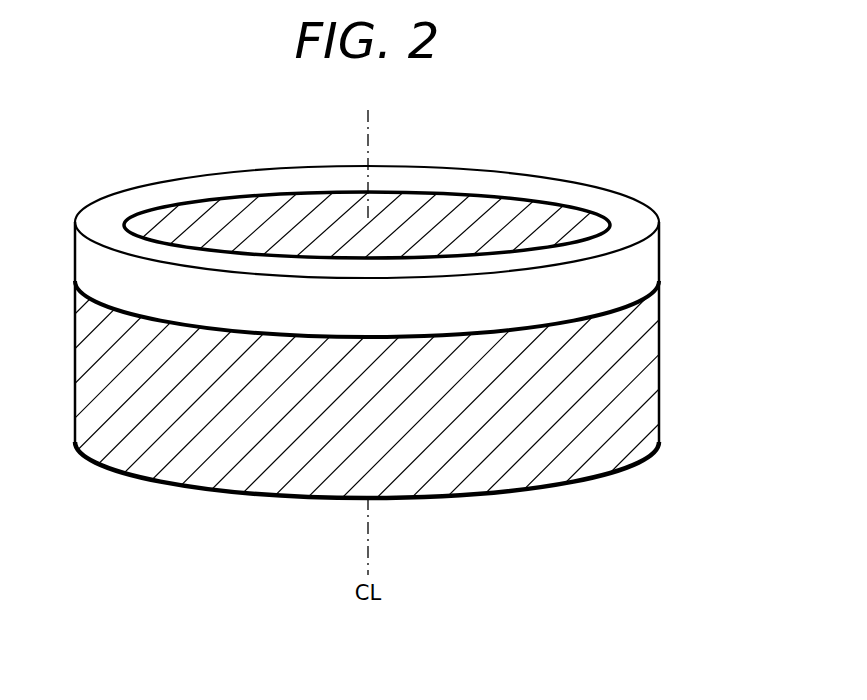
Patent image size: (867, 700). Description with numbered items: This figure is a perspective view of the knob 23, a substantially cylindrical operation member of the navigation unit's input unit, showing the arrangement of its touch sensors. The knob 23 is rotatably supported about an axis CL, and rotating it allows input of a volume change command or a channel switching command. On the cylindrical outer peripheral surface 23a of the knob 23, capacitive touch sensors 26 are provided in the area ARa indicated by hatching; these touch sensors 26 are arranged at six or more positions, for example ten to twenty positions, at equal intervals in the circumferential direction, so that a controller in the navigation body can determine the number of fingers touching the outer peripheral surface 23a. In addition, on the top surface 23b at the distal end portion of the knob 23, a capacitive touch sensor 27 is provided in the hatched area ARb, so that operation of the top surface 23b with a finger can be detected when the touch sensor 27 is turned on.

The knob 23 is at (553, 178).
The outer peripheral surface 23a is at (647, 267).
The top surface 23b is at (113, 220).
The touch sensors 26 is at (573, 462).
The touch sensor 27 is at (297, 215).
The area ARa is at (645, 392).
The area ARb is at (260, 215).